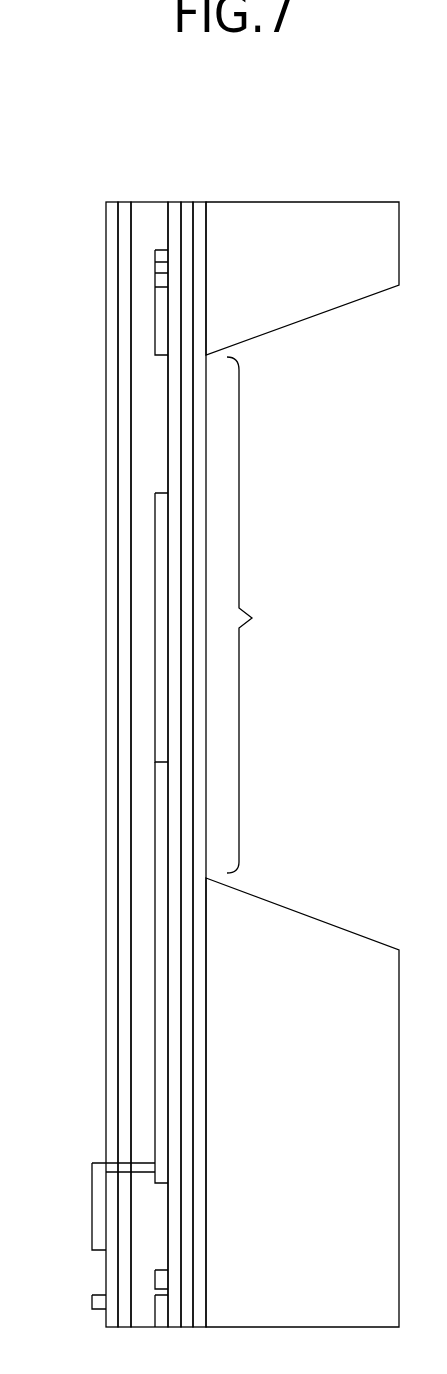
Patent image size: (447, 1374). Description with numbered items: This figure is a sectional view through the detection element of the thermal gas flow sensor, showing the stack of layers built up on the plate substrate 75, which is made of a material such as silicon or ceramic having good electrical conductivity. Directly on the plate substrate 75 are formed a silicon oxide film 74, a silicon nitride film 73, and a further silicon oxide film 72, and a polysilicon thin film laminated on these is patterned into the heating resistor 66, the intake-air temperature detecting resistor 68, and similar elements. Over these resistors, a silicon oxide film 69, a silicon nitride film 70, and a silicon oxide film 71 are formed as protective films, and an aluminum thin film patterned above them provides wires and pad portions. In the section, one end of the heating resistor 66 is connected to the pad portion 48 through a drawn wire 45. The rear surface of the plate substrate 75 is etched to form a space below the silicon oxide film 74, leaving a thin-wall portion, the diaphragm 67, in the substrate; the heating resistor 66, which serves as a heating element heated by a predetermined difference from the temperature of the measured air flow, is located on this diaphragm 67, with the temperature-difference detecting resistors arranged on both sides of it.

The drawn wire 45 is at (162, 942).
The pad portion 48 is at (160, 327).
The heating resistor 66 is at (162, 631).
The diaphragm 67 is at (258, 615).
The intake-air temperature detecting resistor 68 is at (151, 288).
The silicon oxide film 69 is at (110, 224).
The silicon nitride film 70 is at (123, 207).
The silicon oxide film 71 is at (145, 209).
The silicon oxide film 72 is at (177, 208).
The silicon nitride film 73 is at (188, 208).
The silicon oxide film 74 is at (200, 207).
The plate substrate 75 is at (315, 215).